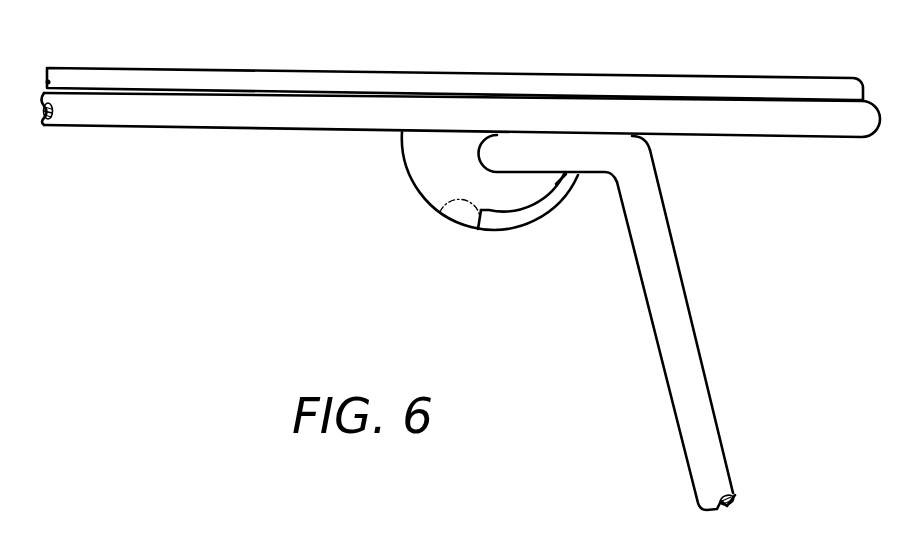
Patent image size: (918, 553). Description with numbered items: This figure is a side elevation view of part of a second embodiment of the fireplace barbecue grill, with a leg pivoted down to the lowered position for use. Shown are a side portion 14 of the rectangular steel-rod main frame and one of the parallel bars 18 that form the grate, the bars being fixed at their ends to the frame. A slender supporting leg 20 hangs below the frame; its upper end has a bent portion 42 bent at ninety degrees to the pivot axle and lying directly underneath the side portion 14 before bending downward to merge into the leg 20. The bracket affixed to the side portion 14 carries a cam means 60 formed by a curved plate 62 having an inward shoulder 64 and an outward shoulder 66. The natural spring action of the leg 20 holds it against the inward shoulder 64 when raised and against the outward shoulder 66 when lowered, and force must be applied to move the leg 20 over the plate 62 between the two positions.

The side portion 14 is at (325, 113).
The bar 18 is at (637, 86).
The supporting leg 20 is at (672, 342).
The bent portion 42 is at (585, 156).
The cam means 60 is at (531, 211).
The curved plate 62 is at (415, 157).
The inward shoulder 64 is at (441, 210).
The outward shoulder 66 is at (566, 173).